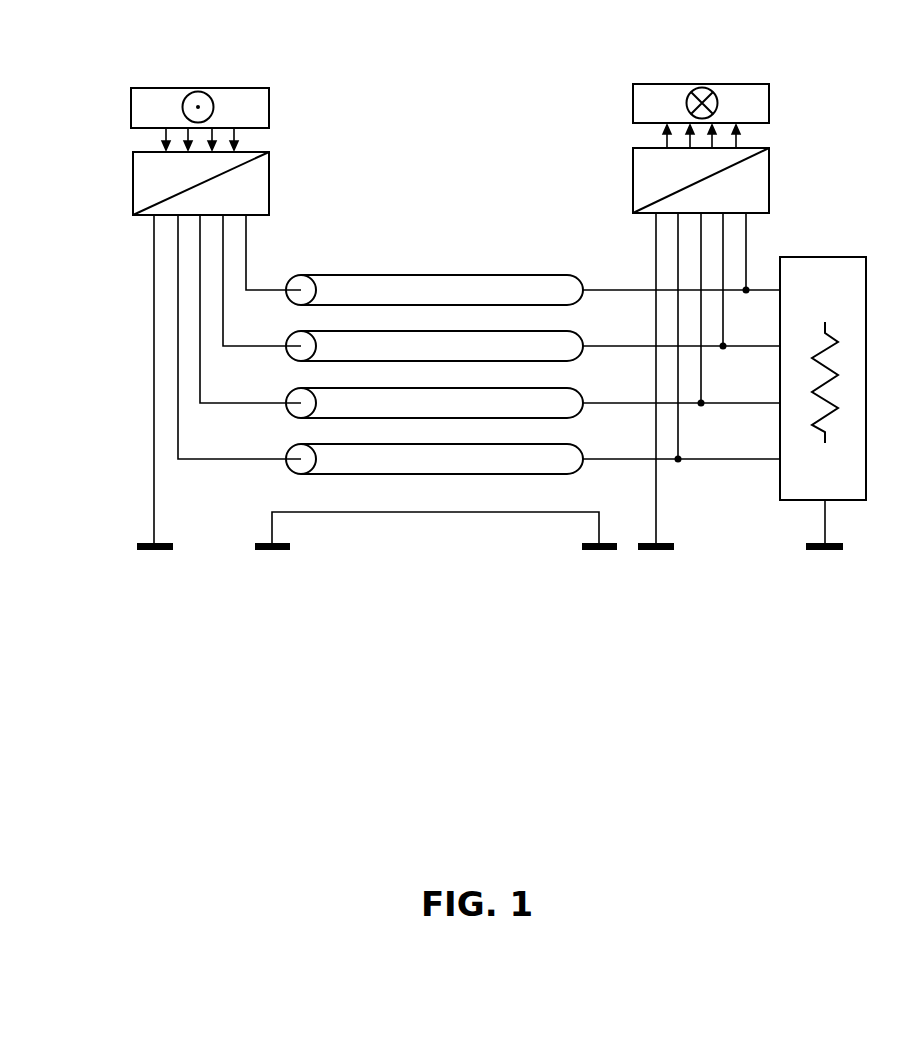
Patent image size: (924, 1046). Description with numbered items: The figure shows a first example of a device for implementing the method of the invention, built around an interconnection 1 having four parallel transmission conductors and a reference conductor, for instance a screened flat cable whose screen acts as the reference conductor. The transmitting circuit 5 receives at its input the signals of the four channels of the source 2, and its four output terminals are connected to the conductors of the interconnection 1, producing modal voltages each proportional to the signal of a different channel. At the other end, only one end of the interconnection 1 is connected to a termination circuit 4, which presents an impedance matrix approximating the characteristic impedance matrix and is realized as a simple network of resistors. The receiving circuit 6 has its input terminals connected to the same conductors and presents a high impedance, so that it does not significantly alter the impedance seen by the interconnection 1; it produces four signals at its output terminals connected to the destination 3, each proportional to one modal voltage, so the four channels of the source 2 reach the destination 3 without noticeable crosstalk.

The interconnection 1 is at (403, 266).
The source 2 is at (205, 81).
The destination 3 is at (703, 72).
The termination circuit 4 is at (825, 252).
The transmitting circuit 5 is at (277, 192).
The receiving circuit 6 is at (775, 180).